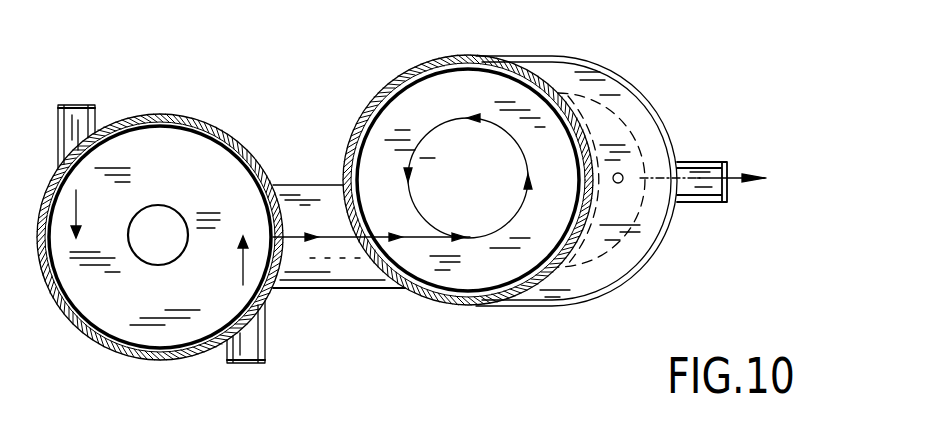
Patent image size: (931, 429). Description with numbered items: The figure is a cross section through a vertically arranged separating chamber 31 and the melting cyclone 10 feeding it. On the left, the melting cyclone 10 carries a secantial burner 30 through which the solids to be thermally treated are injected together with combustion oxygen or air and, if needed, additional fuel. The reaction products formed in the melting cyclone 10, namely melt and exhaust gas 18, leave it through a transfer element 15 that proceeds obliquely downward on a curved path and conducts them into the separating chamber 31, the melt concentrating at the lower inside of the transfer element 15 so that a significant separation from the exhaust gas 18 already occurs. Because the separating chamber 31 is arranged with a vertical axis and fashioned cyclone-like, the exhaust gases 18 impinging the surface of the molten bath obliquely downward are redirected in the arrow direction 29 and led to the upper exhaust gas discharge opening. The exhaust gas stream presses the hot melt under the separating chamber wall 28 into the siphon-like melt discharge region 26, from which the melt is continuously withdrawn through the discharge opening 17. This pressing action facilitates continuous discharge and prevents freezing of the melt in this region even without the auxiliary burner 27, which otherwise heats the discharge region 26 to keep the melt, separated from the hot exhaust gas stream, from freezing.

The melting cyclone 10 is at (172, 179).
The transfer element 15 is at (300, 183).
The discharge opening 17 is at (665, 177).
The exhaust gas 18 is at (732, 184).
The discharge region 26 is at (610, 132).
The auxiliary burner 27 is at (621, 183).
The separating chamber wall 28 is at (574, 254).
The arrow direction 29 is at (479, 240).
The secantial burner 30 is at (75, 120).
The separating chamber 31 is at (472, 112).